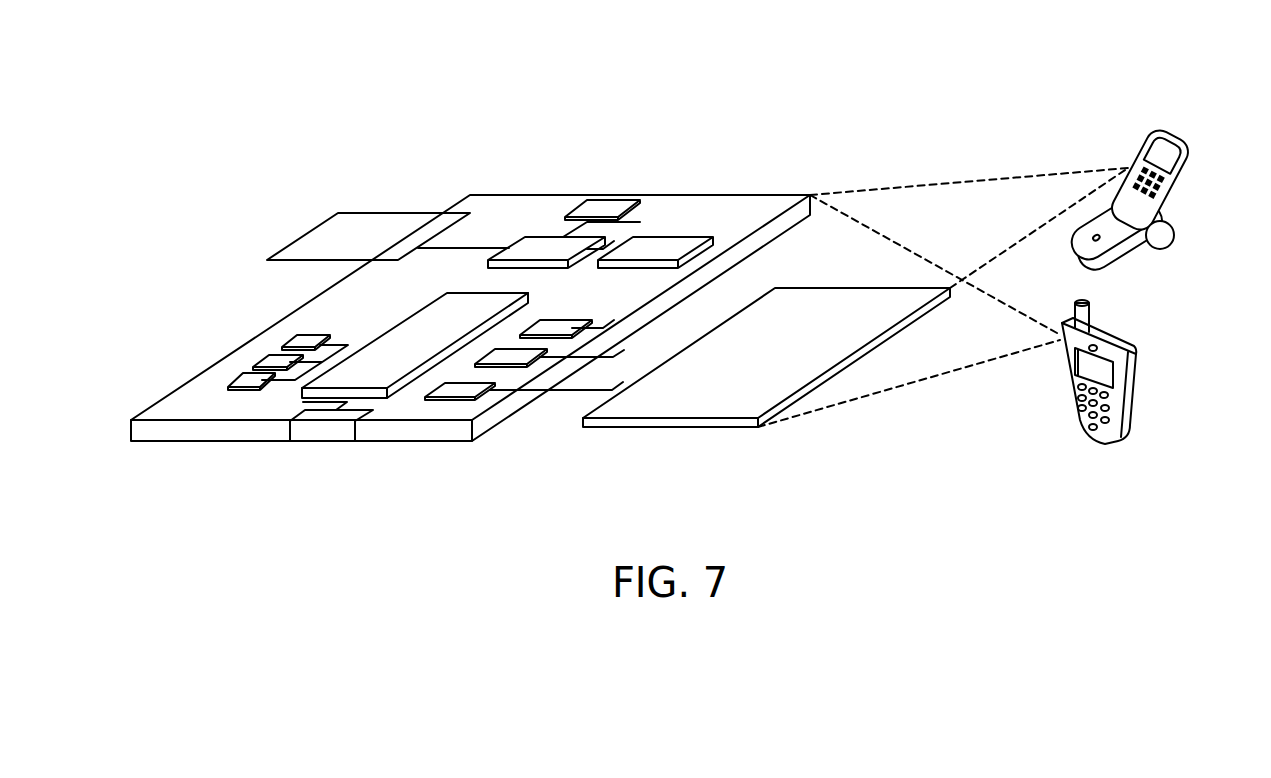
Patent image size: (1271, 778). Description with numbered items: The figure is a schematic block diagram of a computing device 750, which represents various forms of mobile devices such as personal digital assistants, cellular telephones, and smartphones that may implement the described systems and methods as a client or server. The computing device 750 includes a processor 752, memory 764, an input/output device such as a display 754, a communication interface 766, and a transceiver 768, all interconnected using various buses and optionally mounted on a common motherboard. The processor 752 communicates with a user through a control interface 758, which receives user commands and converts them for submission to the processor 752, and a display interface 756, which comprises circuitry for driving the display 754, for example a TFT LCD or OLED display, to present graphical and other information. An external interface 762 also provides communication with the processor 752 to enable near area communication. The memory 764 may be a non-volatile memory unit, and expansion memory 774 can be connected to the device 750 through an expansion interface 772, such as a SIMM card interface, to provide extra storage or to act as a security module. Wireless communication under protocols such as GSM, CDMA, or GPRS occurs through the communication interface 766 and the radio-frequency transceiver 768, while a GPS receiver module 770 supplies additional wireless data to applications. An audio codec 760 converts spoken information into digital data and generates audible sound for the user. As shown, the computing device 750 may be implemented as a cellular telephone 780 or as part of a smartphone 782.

The computing device 750 is at (189, 104).
The processor 752 is at (369, 378).
The display 754 is at (715, 402).
The display interface 756 is at (466, 390).
The control interface 758 is at (503, 361).
The audio codec 760 is at (557, 329).
The external interface 762 is at (327, 425).
The memory 764 is at (253, 366).
The communication interface 766 is at (545, 247).
The transceiver 768 is at (652, 247).
The GPS receiver module 770 is at (612, 206).
The expansion interface 772 is at (443, 212).
The expansion memory 774 is at (338, 213).
The cellular telephone 780 is at (1168, 128).
The smartphone 782 is at (1060, 383).